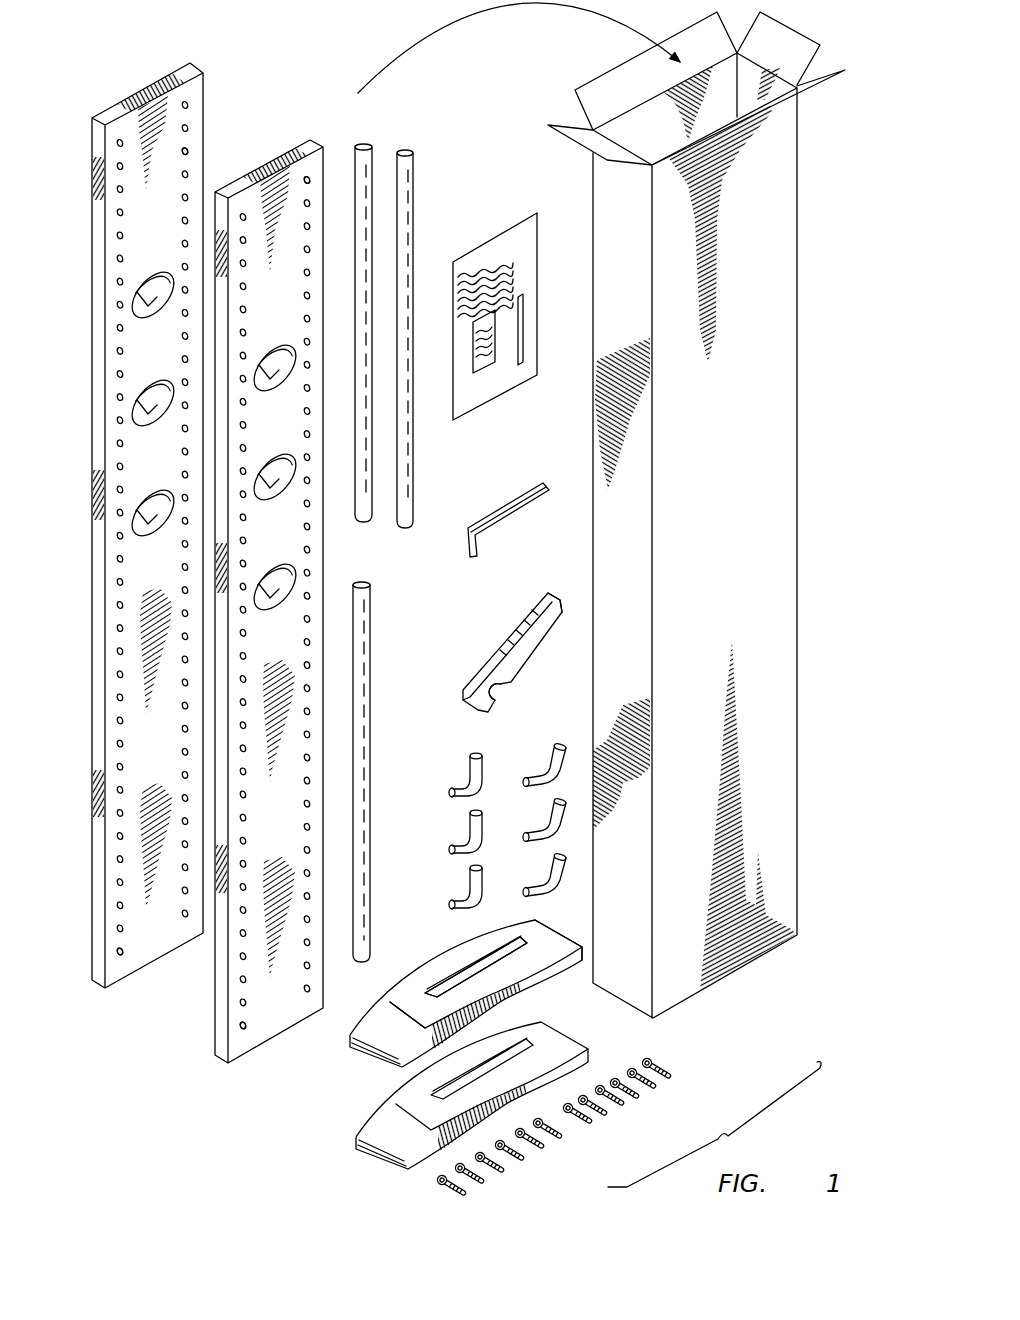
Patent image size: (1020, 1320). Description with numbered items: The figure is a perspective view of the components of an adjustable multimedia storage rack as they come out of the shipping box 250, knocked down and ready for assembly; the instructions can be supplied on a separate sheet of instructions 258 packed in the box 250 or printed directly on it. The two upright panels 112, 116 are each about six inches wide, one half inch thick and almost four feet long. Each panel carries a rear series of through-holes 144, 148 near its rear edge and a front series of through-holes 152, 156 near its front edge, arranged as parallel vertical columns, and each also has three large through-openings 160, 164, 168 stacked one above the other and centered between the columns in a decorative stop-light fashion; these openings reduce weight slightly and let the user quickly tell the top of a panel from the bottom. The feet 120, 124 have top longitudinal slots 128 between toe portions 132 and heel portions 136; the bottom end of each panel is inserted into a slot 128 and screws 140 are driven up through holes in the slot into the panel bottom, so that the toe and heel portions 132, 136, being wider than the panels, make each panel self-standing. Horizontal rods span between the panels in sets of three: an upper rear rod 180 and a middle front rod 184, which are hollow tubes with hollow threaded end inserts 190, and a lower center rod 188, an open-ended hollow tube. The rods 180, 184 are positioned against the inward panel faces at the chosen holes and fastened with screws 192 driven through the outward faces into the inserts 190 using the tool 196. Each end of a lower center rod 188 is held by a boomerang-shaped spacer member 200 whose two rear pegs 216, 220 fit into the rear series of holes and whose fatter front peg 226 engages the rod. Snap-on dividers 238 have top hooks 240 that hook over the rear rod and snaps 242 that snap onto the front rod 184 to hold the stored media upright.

The upright panel 112 is at (112, 968).
The upright panel 116 is at (236, 990).
The foot 120 is at (370, 1035).
The foot 124 is at (375, 1138).
The top longitudinal slot 128 is at (490, 947).
The toe portion 132 is at (407, 997).
The heel portion 136 is at (558, 935).
The screws 140 is at (534, 1160).
The rear series of through-holes 144 is at (187, 153).
The rear series of through-holes 148 is at (307, 180).
The front series of through-holes 152 is at (122, 950).
The front series of through-holes 156 is at (243, 1023).
The large through-opening 160 is at (147, 323).
The large through-opening 164 is at (147, 432).
The large through-opening 168 is at (147, 542).
The upper rear rod 180 is at (412, 205).
The middle front rod 184 is at (368, 490).
The lower center rod 188 is at (357, 692).
The hollow threaded end insert 190 is at (363, 145).
The screws 192 is at (625, 1110).
The tool 196 is at (503, 520).
The spacer member 200 is at (473, 783).
The rear peg 216 is at (561, 768).
The rear peg 220 is at (562, 877).
The front peg 226 is at (453, 847).
The snap-on divider 238 is at (492, 667).
The top hook 240 is at (558, 610).
The snap 242 is at (493, 703).
The box 250 is at (758, 503).
The sheet of instructions 258 is at (488, 380).